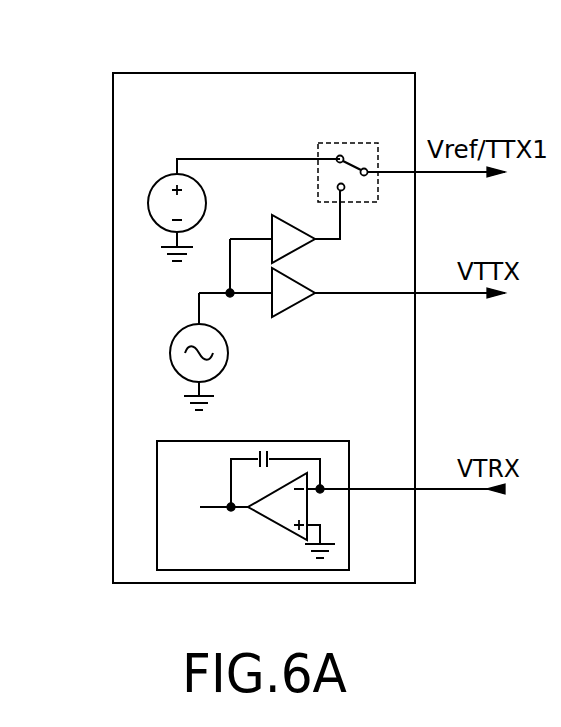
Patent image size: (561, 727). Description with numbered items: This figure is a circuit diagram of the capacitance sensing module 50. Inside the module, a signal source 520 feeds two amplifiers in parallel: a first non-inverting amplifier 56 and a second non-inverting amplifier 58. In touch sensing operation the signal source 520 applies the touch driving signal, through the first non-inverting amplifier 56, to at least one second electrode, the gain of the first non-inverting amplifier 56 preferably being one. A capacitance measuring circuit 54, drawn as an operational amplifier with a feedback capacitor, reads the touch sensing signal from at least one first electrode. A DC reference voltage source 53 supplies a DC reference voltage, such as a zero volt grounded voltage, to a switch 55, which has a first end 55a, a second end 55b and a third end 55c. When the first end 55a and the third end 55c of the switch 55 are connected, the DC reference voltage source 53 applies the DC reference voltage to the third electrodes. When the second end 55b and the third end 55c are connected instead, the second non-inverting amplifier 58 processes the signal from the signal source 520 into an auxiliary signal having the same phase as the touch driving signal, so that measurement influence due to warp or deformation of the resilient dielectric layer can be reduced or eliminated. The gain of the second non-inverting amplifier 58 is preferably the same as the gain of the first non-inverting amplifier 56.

The capacitance sensing module 50 is at (263, 73).
The DC reference voltage source 53 is at (148, 203).
The capacitance measuring circuit 54 is at (253, 441).
The switch 55 is at (374, 174).
The first end 55a is at (338, 155).
The second end 55b is at (345, 186).
The third end 55c is at (365, 168).
The first non-inverting amplifier 56 is at (293, 310).
The second non-inverting amplifier 58 is at (293, 255).
The signal source 520 is at (170, 353).